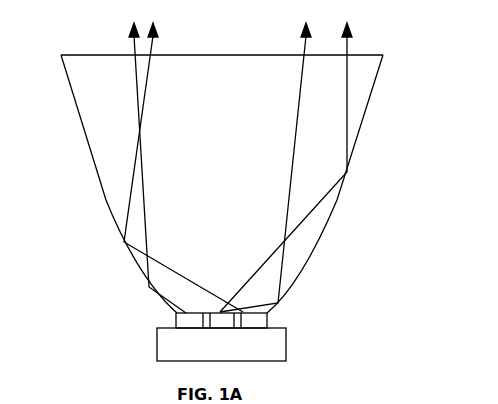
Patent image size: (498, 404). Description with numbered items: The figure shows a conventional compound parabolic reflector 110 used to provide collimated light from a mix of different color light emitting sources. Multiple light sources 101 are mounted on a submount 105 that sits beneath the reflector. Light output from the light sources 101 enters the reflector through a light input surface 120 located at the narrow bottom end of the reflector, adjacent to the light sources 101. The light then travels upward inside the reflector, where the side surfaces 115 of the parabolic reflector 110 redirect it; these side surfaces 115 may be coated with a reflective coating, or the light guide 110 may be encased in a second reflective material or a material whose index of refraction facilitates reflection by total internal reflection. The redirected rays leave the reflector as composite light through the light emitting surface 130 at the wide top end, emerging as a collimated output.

The compound parabolic reflector 110 is at (375, 215).
The side surfaces 115 is at (91, 158).
The light emitting surface 130 is at (363, 54).
The light input surface 120 is at (267, 313).
The light sources 101 is at (255, 321).
The submount 105 is at (266, 342).